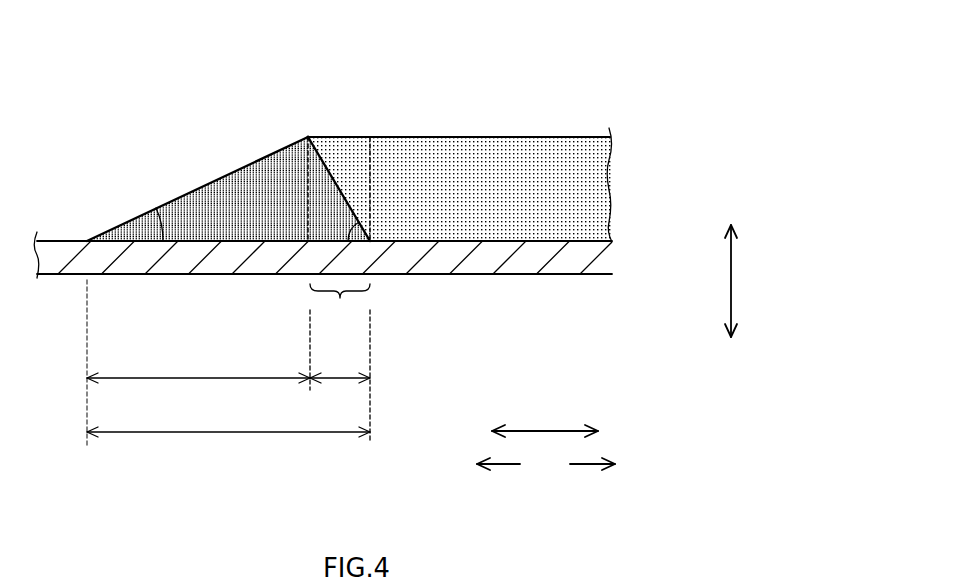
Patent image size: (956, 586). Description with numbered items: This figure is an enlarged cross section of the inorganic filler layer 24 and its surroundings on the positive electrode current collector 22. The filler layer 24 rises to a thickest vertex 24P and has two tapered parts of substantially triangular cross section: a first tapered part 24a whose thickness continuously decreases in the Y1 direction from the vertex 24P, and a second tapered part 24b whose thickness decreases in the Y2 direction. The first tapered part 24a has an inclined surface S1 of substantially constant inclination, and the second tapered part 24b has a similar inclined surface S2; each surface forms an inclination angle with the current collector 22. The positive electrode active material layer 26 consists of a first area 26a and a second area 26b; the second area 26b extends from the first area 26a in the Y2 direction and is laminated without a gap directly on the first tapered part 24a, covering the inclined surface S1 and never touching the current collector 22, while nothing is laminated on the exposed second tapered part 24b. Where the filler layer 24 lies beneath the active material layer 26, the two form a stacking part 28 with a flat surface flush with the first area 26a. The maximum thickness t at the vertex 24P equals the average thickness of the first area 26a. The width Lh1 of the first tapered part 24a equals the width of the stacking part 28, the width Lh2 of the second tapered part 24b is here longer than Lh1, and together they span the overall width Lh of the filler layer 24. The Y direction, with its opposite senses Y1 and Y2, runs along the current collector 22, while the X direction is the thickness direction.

The positive electrode current collector 22 is at (580, 258).
The inorganic filler layer 24 is at (162, 110).
The first tapered part 24a is at (322, 137).
The second tapered part 24b is at (257, 182).
The vertex 24P is at (308, 137).
The positive electrode active material layer 26 is at (478, 105).
The first area 26a is at (483, 187).
The second area 26b is at (353, 173).
The stacking part 28 is at (340, 363).
The inclined surface S1 is at (334, 158).
The inclined surface S2 is at (208, 184).
The maximum thickness t is at (308, 217).
The total length Lh is at (228, 449).
The width of first tapered part Lh1 is at (340, 392).
The width of second tapered part Lh2 is at (198, 362).
The X direction X is at (741, 281).
The Y direction Y is at (545, 417).
The Y1 direction Y1 is at (611, 466).
The Y2 direction Y2 is at (478, 466).